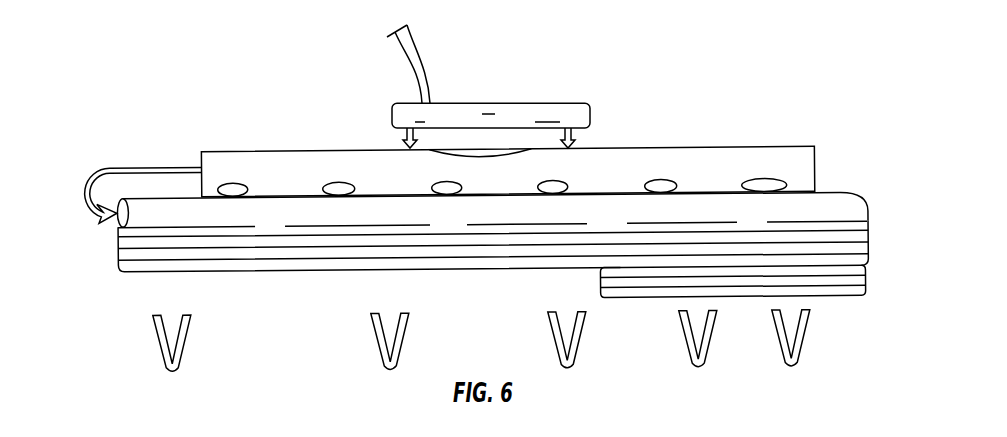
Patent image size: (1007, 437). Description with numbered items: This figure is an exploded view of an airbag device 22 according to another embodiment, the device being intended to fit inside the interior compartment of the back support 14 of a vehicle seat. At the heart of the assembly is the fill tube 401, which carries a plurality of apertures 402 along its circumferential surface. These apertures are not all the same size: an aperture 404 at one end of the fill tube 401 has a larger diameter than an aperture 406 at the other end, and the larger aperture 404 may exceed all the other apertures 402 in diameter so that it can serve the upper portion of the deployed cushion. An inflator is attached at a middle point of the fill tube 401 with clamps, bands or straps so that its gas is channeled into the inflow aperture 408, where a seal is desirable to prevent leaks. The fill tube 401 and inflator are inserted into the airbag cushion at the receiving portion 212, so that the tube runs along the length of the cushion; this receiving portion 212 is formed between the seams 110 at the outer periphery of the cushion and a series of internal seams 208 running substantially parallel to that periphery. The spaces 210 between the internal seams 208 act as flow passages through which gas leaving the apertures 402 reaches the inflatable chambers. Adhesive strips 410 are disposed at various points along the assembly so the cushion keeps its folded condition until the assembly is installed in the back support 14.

The airbag device 22 is at (632, 68).
The fill tube 401 is at (673, 155).
The inflow aperture 408 is at (477, 156).
The aperture 406 is at (240, 182).
The apertures 402 is at (432, 187).
The aperture 404 is at (767, 179).
The spaces 210 is at (752, 227).
The seams 110 is at (830, 193).
The internal seams 208 is at (847, 193).
The receiving portion 212 is at (117, 224).
The adhesive strips 410 is at (687, 343).
The back support 14 is at (167, 432).